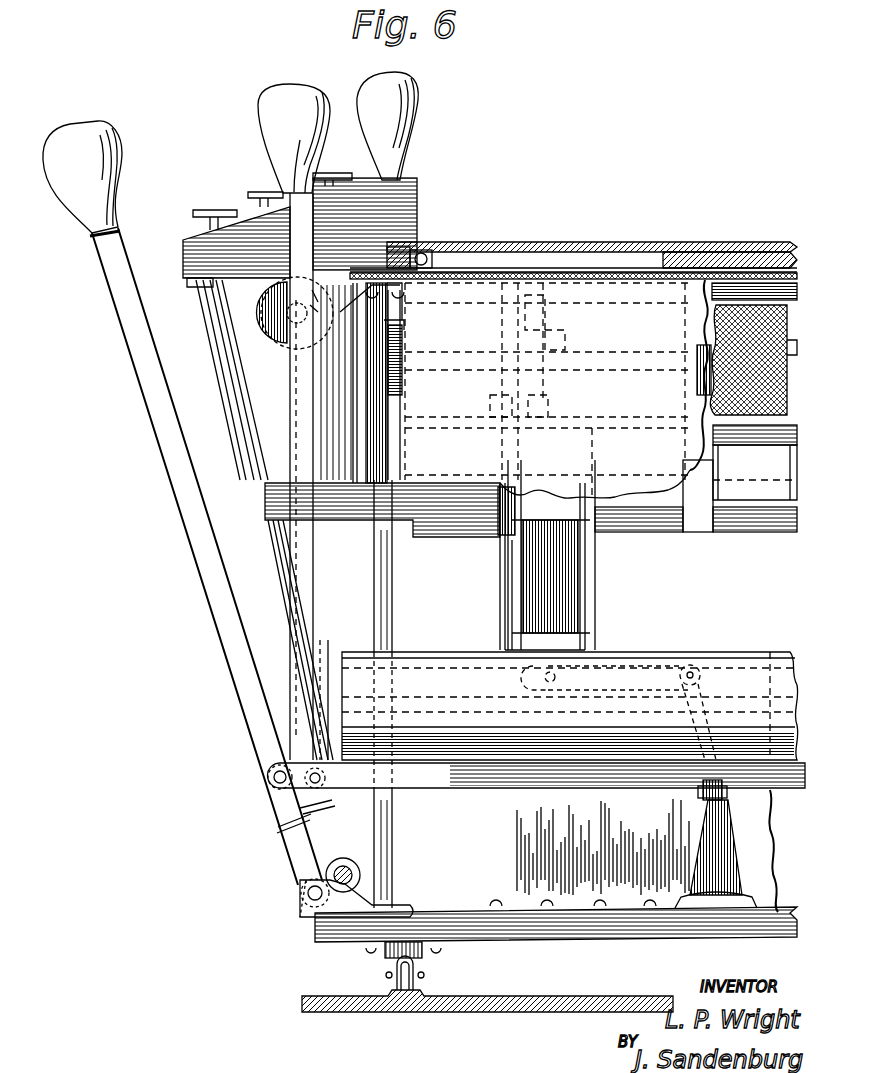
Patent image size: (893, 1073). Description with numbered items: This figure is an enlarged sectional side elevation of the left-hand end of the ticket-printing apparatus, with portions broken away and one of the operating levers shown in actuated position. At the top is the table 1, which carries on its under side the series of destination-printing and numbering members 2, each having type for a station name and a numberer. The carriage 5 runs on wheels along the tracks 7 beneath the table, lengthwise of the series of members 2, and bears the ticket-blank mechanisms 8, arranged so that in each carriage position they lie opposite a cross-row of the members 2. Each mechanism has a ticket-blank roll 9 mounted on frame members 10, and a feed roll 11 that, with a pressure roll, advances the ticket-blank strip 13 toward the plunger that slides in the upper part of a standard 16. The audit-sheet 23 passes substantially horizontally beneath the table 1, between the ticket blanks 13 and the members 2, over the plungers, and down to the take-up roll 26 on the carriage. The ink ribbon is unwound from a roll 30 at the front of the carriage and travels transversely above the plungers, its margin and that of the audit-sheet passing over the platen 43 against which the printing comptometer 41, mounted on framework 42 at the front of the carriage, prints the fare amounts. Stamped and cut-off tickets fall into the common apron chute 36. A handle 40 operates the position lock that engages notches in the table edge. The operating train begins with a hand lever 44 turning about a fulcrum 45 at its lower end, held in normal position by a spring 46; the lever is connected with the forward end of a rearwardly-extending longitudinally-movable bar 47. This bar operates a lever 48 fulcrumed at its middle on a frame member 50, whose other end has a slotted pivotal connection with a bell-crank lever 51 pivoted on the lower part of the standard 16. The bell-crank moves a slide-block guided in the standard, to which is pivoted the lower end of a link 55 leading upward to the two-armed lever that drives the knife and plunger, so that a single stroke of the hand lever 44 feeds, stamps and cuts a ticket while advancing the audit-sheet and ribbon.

The table 1 is at (741, 265).
The destination-printing and numbering members 2 is at (527, 258).
The carriage 5 is at (315, 933).
The tracks 7 is at (422, 995).
The ticket-blank mechanisms 8 is at (521, 601).
The ticket-blank roll 9 is at (713, 530).
The frame members 10 is at (385, 642).
The feed roll 11 is at (712, 322).
The ticket-blank strip 13 is at (676, 268).
The standard 16 is at (588, 570).
The audit-sheet 23 is at (412, 247).
The take-up roll 26 is at (727, 652).
The ink ribbon roll 30 is at (270, 312).
The apron chute 36 is at (547, 391).
The handle 40 is at (410, 141).
The printing comptometer 41 is at (418, 193).
The framework 42 is at (330, 390).
The platen 43 is at (373, 273).
The hand lever 44 is at (292, 136).
The fulcrum 45 is at (306, 893).
The spring 46 is at (346, 866).
The longitudinally-movable bar 47 is at (455, 775).
The lever 48 is at (727, 792).
The frame member 50 is at (727, 858).
The bell-crank lever 51 is at (637, 672).
The link 55 is at (498, 600).